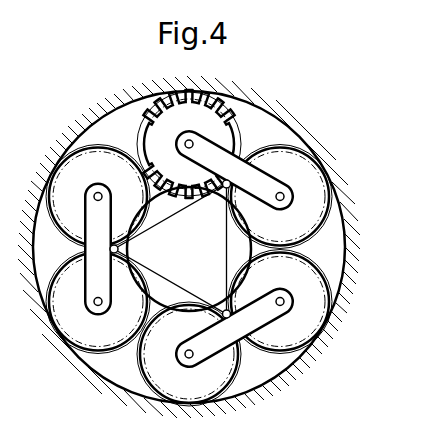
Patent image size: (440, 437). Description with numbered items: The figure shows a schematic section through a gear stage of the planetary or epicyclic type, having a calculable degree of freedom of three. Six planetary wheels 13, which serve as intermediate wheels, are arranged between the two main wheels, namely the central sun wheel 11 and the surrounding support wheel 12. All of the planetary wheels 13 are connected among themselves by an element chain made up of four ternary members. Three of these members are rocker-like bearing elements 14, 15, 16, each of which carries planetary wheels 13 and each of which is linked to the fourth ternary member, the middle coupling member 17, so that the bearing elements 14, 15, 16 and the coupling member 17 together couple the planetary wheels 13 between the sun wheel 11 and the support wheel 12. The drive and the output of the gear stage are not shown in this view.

The sun wheel 11 is at (178, 202).
The support wheel 12 is at (339, 310).
The planetary wheels 13 is at (147, 117).
The rocker-like bearing element 14 is at (189, 264).
The rocker-like bearing element 15 is at (110, 249).
The rocker-like bearing element 16 is at (200, 144).
The middle coupling member 17 is at (145, 232).